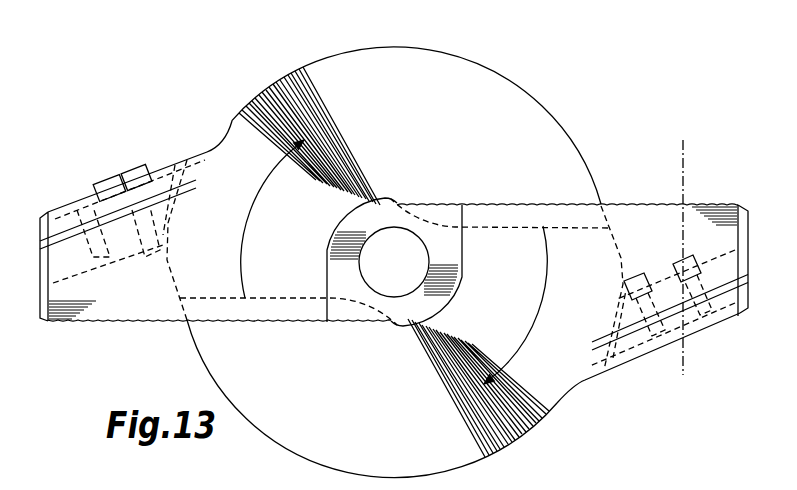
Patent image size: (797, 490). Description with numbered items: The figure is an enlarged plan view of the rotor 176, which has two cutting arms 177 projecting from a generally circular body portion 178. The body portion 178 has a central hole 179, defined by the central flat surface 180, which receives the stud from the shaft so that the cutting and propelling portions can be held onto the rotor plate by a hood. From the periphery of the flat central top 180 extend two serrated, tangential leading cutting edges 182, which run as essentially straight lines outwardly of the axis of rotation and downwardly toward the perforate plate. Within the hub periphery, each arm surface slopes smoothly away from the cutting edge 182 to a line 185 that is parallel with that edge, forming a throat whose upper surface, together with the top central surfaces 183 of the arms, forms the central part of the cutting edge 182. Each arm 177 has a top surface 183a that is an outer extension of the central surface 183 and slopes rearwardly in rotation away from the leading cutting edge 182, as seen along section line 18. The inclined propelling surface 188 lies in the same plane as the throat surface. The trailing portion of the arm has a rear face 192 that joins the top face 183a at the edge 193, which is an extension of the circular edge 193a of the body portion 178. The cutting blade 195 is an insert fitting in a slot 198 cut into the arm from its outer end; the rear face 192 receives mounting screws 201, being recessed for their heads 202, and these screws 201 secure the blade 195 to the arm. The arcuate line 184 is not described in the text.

The section line 18- 18 is at (669, 150).
The rotor 176 is at (453, 48).
The cutting arm 177 is at (37, 292).
The circular body portion 178 is at (478, 111).
The central hole 179 is at (392, 229).
The central flat surface 180 is at (447, 255).
The leading cutting edge 182 is at (165, 323).
The top central surface 183 is at (216, 233).
The top surface of arm 183a is at (147, 302).
The arcuate slot 184 is at (257, 197).
The line 185 is at (290, 296).
The propelling surface 188 is at (742, 212).
The rear face 192 is at (45, 214).
The edge 193 is at (100, 192).
The circular edge 193a is at (293, 72).
The cutting blade 195 is at (165, 193).
The slot 198 is at (182, 201).
The mounting screw 201 is at (673, 270).
The screw head 202 is at (133, 180).